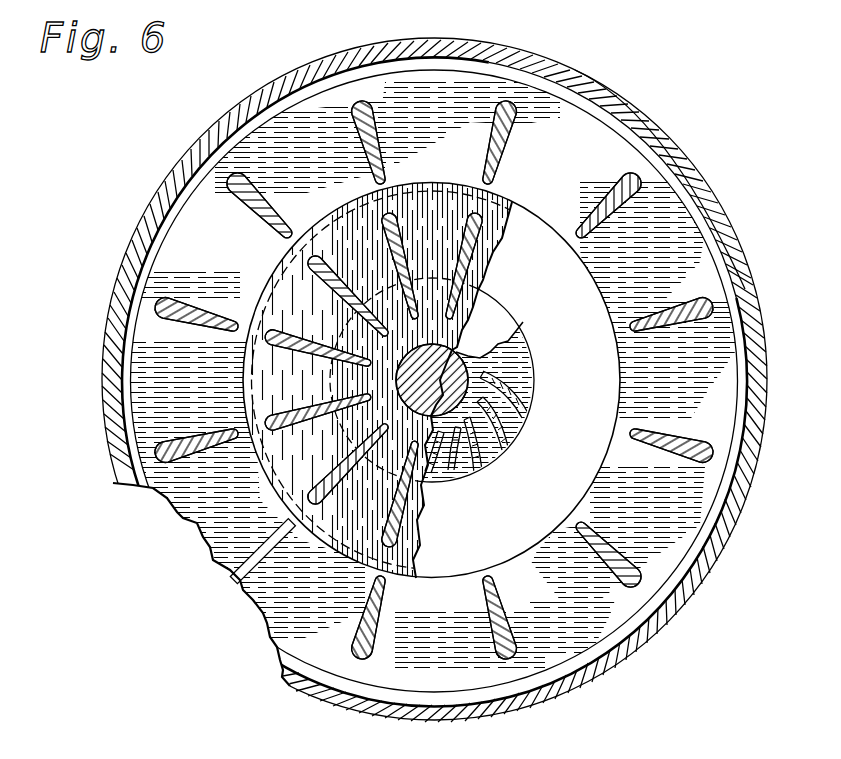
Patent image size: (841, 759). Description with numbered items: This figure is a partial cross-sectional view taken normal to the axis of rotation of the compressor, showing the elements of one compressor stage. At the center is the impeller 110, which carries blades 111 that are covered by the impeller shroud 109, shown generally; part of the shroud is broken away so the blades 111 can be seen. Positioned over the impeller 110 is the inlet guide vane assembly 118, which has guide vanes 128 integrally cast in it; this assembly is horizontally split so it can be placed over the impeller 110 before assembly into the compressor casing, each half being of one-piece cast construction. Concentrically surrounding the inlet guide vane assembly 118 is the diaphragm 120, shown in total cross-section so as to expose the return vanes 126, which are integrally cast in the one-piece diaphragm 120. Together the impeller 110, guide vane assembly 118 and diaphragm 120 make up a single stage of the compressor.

The impeller shroud 109 is at (487, 323).
The impeller 110 is at (465, 388).
The blades 111 is at (487, 457).
The inlet guide vane assembly 118 is at (386, 516).
The diaphragm 120 is at (348, 631).
The return vanes 126 is at (513, 94).
The guide vanes 128 is at (402, 222).